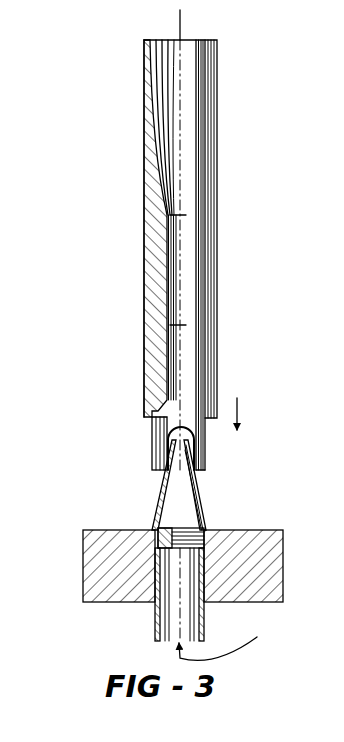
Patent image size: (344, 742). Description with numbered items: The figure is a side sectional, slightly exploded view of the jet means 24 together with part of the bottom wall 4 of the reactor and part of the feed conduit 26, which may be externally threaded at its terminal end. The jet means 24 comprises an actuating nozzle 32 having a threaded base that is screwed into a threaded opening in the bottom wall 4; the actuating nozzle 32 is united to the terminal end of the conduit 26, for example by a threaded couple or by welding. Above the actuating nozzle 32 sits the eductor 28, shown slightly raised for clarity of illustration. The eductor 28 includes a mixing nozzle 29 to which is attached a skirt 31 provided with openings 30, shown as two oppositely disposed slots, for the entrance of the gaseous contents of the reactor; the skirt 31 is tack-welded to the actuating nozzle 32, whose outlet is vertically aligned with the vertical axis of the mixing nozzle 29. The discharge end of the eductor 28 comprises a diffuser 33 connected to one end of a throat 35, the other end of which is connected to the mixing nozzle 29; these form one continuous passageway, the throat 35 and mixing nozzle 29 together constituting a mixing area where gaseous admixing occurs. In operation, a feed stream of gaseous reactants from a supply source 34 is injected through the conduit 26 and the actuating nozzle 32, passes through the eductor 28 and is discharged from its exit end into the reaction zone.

The bottom wall 4 is at (95, 565).
The jet means 24 is at (128, 482).
The feed conduit 26 is at (155, 615).
The eductor 28 is at (215, 190).
The mixing nozzle 29 is at (176, 360).
The openings 30 is at (176, 431).
The skirt 31 is at (205, 458).
The actuating nozzle 32 is at (201, 503).
The diffuser 33 is at (170, 85).
The supply source 34 is at (218, 638).
The throat 35 is at (172, 267).